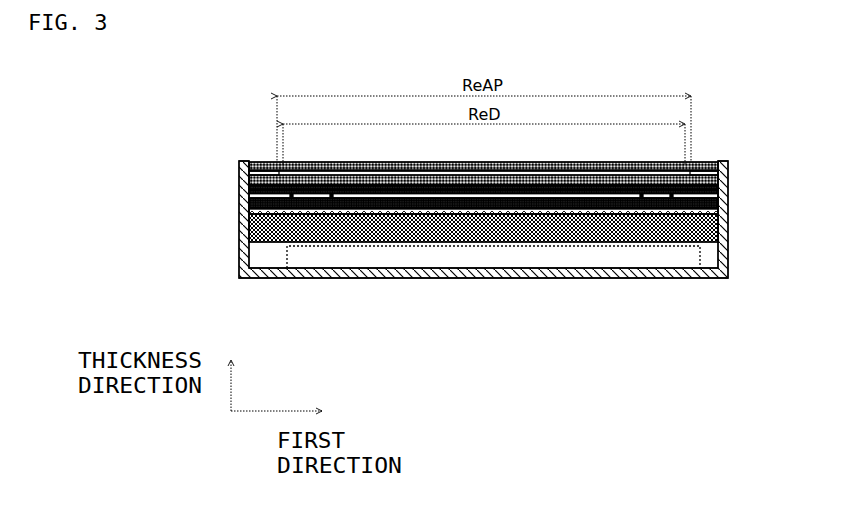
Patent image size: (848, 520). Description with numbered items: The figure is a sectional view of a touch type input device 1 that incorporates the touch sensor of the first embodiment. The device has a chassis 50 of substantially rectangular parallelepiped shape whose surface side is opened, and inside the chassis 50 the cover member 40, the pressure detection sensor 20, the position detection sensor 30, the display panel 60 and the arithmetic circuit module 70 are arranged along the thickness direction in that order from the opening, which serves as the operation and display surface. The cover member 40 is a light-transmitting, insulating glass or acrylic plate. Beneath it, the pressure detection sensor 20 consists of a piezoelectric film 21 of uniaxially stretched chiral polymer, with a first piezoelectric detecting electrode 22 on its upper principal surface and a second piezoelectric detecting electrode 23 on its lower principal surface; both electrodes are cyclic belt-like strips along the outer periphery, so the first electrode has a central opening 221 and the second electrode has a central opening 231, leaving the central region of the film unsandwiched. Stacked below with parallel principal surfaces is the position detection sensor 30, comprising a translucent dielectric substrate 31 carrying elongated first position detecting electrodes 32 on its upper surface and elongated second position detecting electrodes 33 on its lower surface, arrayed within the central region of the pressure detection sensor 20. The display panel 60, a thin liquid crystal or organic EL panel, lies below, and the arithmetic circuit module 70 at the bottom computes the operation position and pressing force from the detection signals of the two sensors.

The touch type input device 1 is at (484, 180).
The pressure detection sensor 20 is at (518, 163).
The piezoelectric film 21 is at (722, 180).
The first piezoelectric detecting electrode 22 is at (505, 154).
The second piezoelectric detecting electrode 23 is at (505, 170).
The opening 221 is at (592, 167).
The opening 231 is at (633, 184).
The cover member 40 is at (702, 172).
The position detection sensor 30 is at (449, 186).
The dielectric substrate 31 is at (256, 206).
The first position detecting electrode 32 is at (258, 195).
The second position detecting electrode 33 is at (256, 213).
The display panel 60 is at (722, 237).
The arithmetic circuit module 70 is at (618, 266).
The chassis 50 is at (706, 276).